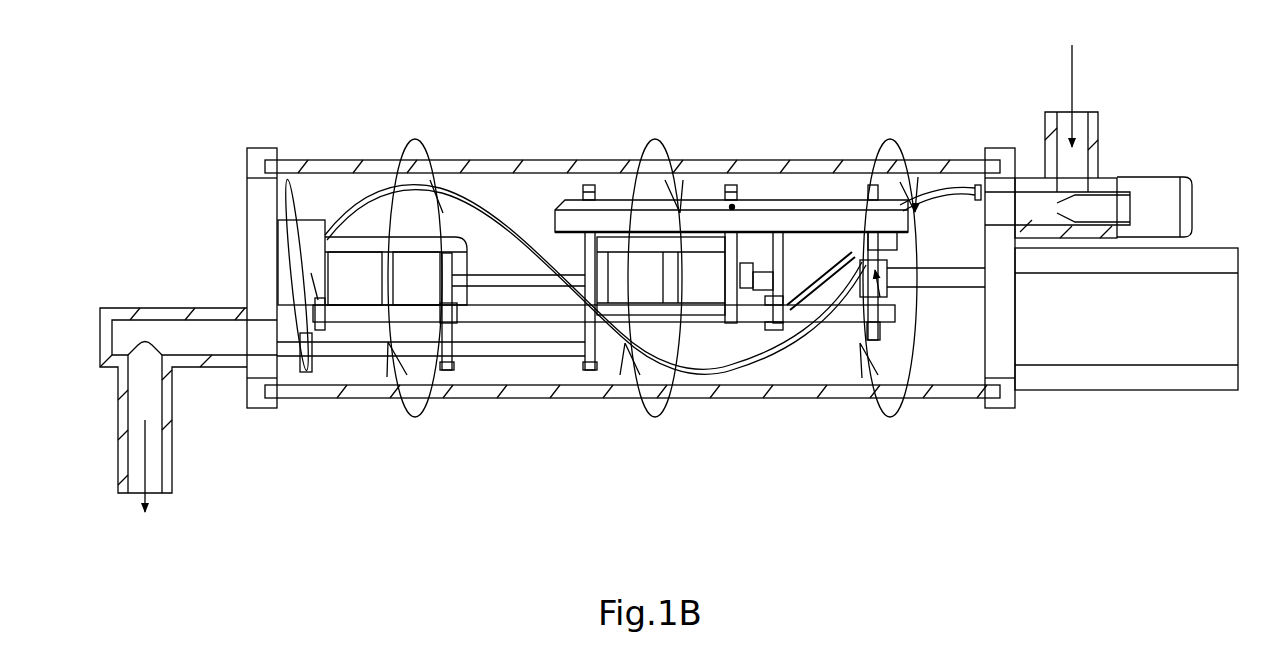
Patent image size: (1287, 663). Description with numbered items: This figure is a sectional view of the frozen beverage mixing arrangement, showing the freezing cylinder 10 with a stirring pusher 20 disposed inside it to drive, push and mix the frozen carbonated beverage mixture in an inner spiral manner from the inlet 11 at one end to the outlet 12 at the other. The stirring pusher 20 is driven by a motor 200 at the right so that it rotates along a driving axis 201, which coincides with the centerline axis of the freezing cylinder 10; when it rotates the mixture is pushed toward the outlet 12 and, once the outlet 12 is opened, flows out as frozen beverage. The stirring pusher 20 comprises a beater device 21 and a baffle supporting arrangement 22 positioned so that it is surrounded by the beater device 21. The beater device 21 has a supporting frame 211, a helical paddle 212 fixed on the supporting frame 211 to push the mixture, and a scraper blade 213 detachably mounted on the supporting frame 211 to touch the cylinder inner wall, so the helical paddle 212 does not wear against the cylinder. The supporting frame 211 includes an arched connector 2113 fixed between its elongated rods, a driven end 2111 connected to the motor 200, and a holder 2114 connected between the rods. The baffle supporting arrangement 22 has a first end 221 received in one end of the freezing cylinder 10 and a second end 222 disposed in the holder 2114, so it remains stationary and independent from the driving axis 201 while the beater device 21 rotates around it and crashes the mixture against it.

The freezing cylinder 10 is at (850, 165).
The inlet 11 is at (1095, 140).
The outlet 12 is at (122, 460).
The stirring pusher 20 is at (402, 90).
The beater device 21 is at (465, 205).
The baffle supporting arrangement 22 is at (383, 245).
The motor 200 is at (1148, 330).
The driving axis 201 is at (940, 282).
The supporting frame 211 is at (823, 313).
The helical paddle 212 is at (687, 320).
The scraper blade 213 is at (712, 220).
The first end 221 is at (313, 335).
The second end 222 is at (767, 305).
The driven end 2111 is at (890, 330).
The arched connector 2113 is at (593, 282).
The holder 2114 is at (773, 257).